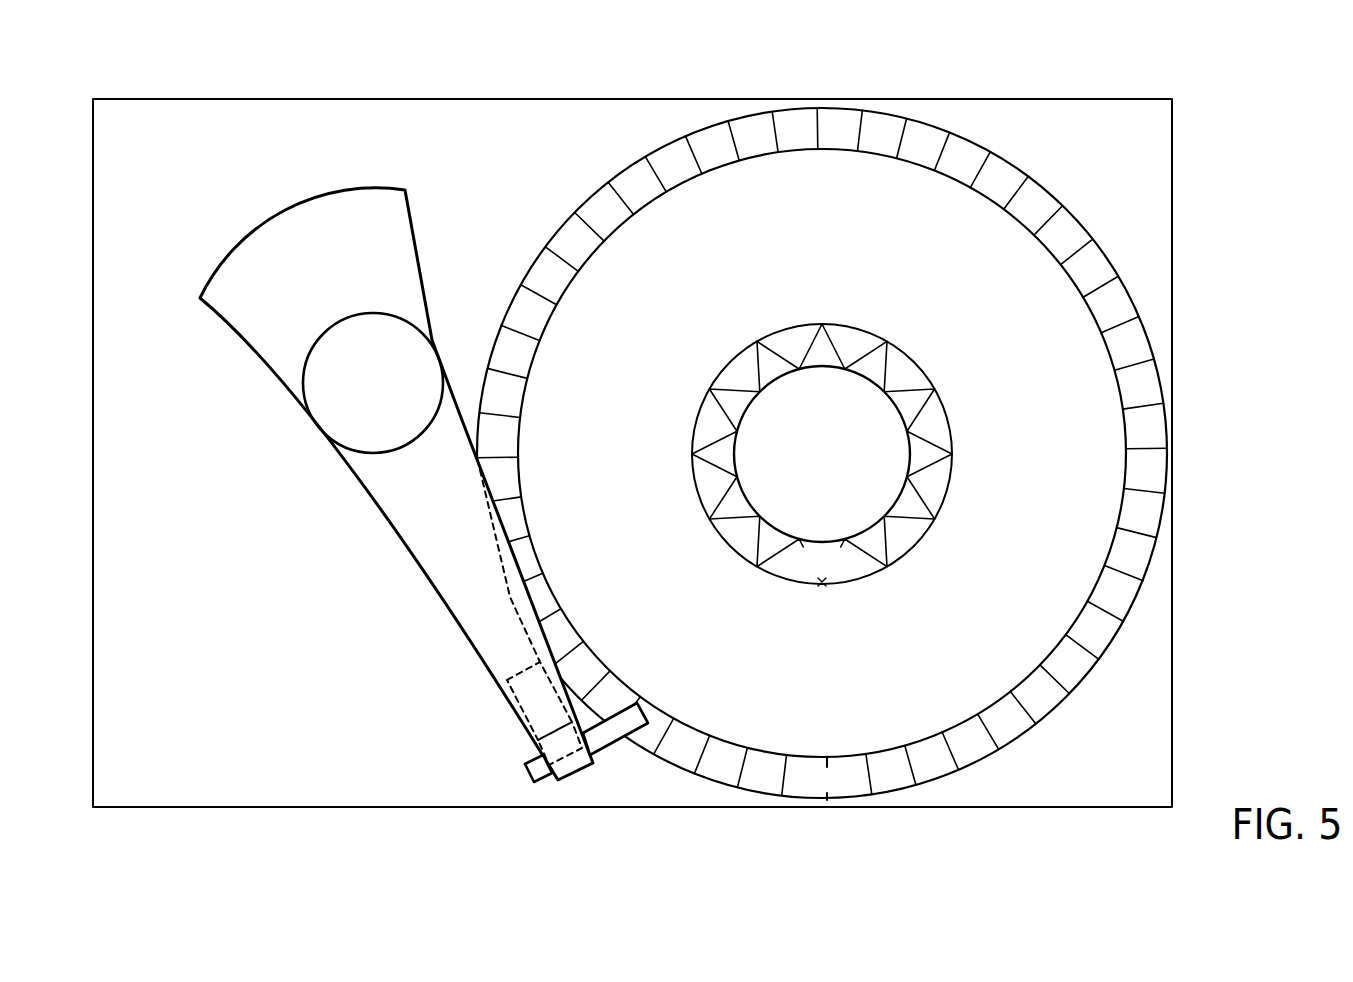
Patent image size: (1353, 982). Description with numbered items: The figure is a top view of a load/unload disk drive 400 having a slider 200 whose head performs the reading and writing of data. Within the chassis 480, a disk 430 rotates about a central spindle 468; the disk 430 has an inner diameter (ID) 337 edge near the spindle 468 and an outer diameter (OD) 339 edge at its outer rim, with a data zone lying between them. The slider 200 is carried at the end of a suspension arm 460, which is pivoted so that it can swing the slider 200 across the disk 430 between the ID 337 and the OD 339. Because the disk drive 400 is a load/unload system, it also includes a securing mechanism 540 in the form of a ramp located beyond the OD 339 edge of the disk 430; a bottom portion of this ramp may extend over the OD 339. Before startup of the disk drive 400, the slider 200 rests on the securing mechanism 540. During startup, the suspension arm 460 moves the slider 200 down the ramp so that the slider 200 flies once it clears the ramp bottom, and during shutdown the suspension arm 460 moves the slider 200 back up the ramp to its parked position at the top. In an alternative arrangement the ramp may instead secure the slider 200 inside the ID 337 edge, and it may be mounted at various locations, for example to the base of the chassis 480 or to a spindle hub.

The disk drive 400 is at (1111, 58).
The disk 430 is at (997, 154).
The chassis 480 is at (1152, 177).
The suspension arm 460 is at (416, 550).
The slider 200 is at (528, 730).
The securing mechanism (ramp) 540 is at (528, 770).
The spindle 468 is at (846, 495).
The inner diameter (ID) 337 is at (843, 567).
The outer diameter (OD) 339 is at (837, 762).